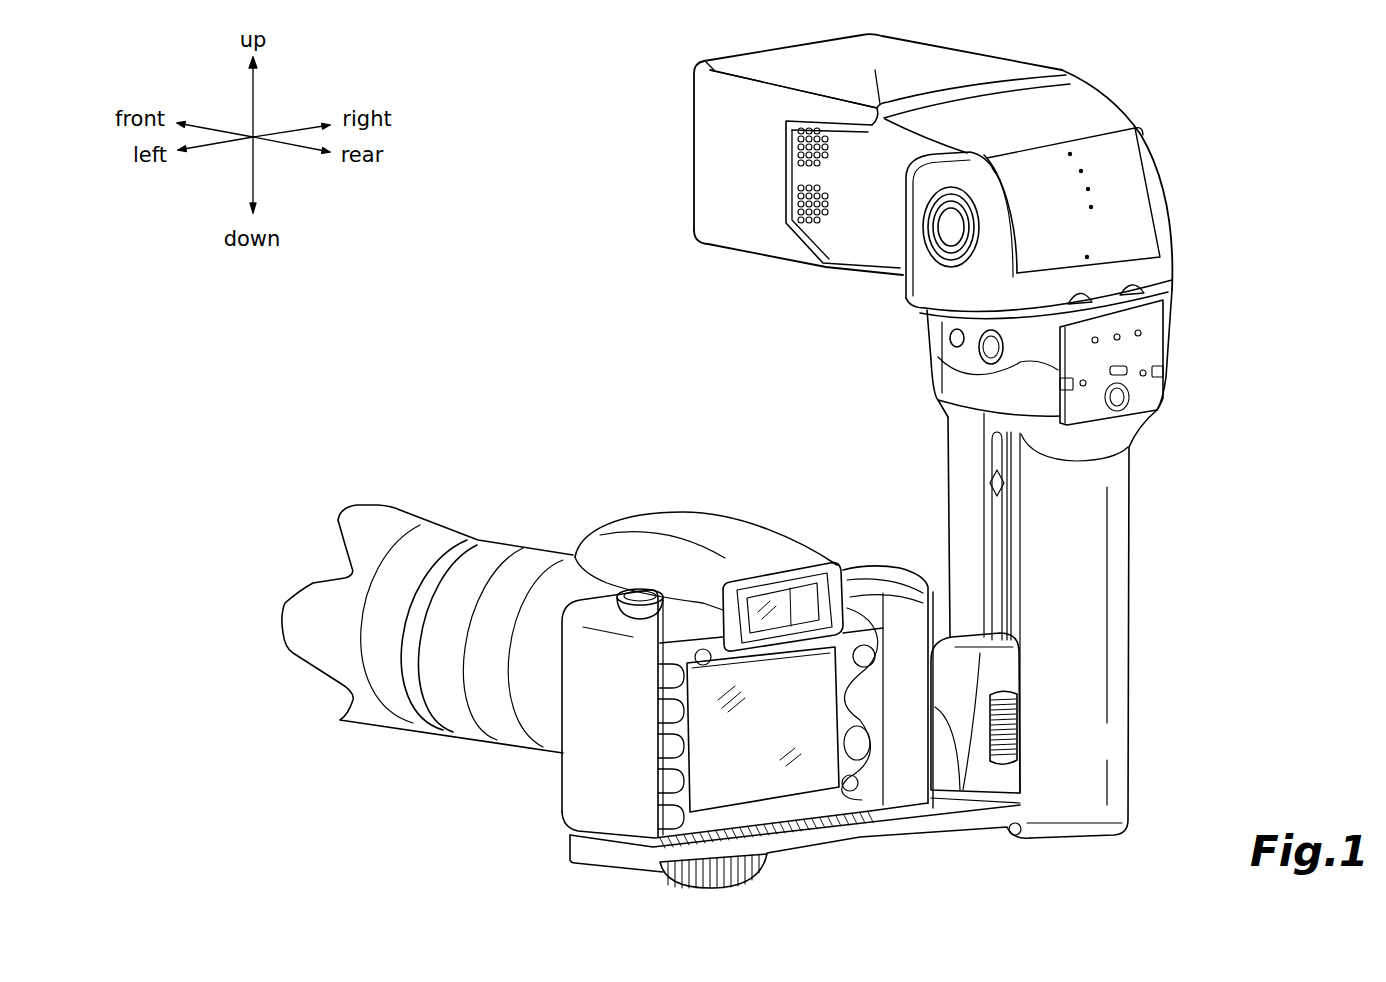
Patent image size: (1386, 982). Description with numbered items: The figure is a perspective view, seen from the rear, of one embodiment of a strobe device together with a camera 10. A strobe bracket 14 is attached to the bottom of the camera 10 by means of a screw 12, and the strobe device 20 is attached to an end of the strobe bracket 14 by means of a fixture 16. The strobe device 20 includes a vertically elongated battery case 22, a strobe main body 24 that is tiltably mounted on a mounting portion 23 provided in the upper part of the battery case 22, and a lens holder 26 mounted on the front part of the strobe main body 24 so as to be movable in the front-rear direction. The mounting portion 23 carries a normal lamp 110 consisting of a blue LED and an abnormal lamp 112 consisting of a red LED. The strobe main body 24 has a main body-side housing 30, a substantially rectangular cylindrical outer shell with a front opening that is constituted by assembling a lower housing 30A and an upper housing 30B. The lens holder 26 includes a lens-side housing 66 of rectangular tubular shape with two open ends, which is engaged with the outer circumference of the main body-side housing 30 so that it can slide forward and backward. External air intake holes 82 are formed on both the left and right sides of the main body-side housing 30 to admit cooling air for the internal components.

The camera 10 is at (543, 750).
The screw 12 is at (767, 868).
The strobe bracket 14 is at (863, 817).
The fixture 16 is at (1027, 747).
The strobe device 20 is at (1173, 423).
The battery case 22 is at (1085, 575).
The mounting portion 23 is at (1167, 268).
The strobe main body 24 is at (1130, 108).
The lens holder 26 is at (943, 72).
The main body-side housing 30 is at (1085, 97).
The lower housing 30A is at (825, 245).
The upper housing 30B is at (870, 172).
The lens-side housing 66 is at (890, 47).
The external air intake holes 82 is at (830, 183).
The normal lamp 110 is at (1070, 294).
The abnormal lamp 112 is at (1130, 282).